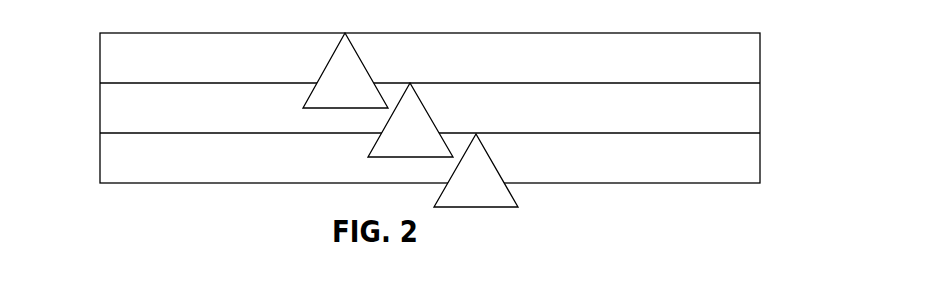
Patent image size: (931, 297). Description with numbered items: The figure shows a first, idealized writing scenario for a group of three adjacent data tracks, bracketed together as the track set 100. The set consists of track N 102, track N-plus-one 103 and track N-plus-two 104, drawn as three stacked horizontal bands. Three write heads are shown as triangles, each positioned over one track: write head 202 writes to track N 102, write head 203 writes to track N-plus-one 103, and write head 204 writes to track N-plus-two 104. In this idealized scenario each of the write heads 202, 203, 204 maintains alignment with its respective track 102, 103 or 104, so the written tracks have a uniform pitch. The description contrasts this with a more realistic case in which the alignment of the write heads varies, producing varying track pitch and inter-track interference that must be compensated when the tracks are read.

The track set 100 is at (428, 108).
The track N 102 is at (772, 35).
The track N+1 103 is at (772, 86).
The track N+2 104 is at (772, 136).
The write head 202 is at (355, 77).
The write head 203 is at (422, 125).
The write head 204 is at (487, 175).